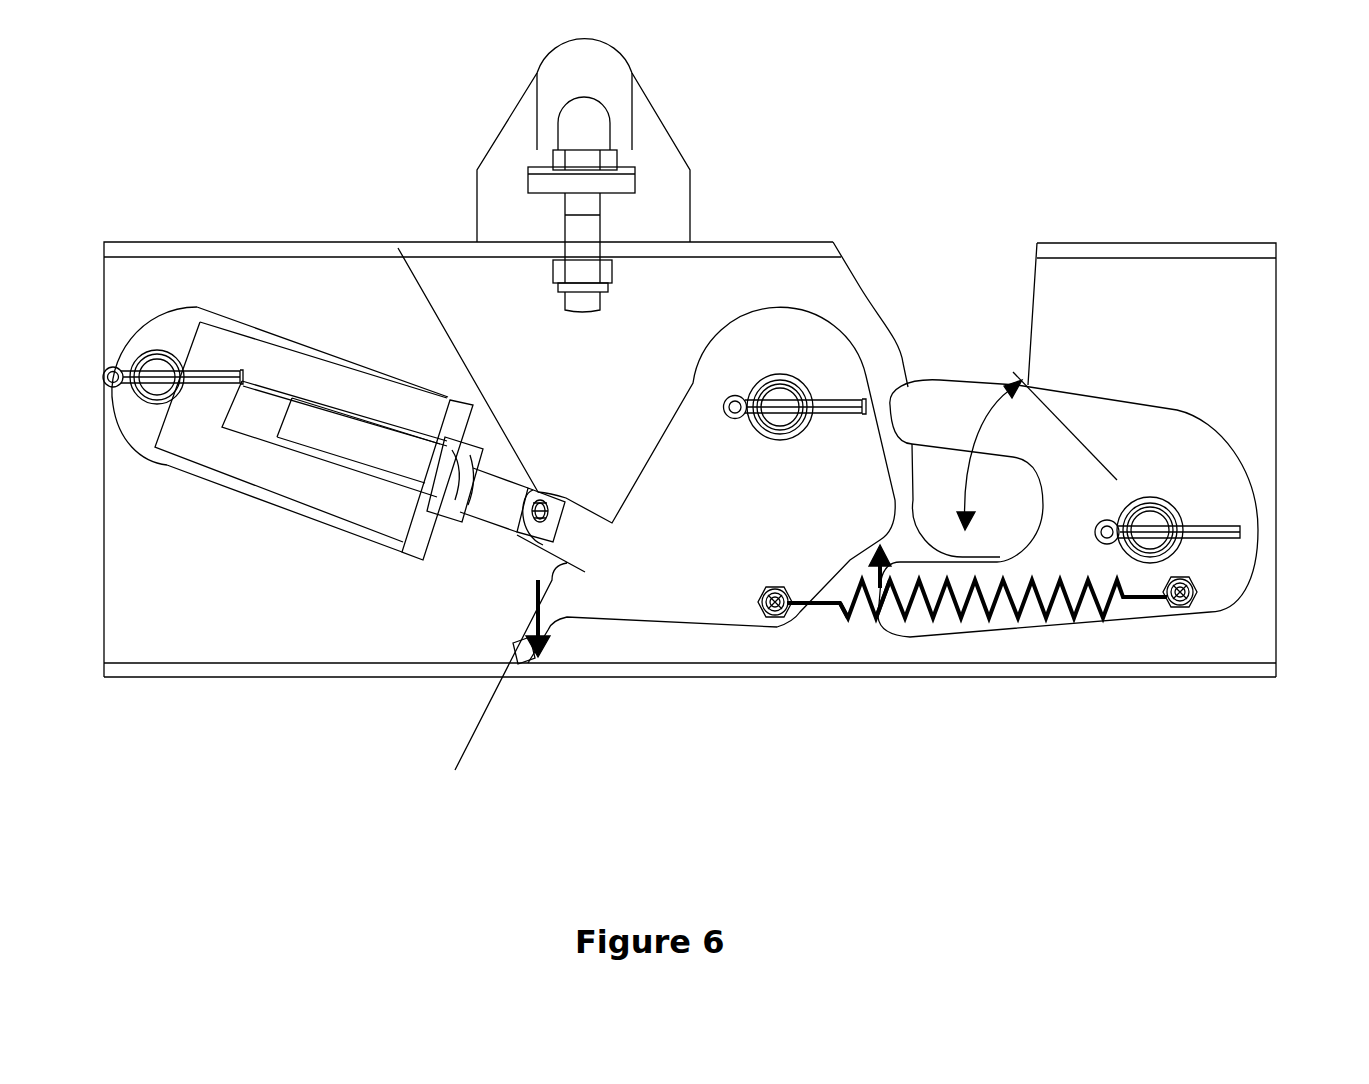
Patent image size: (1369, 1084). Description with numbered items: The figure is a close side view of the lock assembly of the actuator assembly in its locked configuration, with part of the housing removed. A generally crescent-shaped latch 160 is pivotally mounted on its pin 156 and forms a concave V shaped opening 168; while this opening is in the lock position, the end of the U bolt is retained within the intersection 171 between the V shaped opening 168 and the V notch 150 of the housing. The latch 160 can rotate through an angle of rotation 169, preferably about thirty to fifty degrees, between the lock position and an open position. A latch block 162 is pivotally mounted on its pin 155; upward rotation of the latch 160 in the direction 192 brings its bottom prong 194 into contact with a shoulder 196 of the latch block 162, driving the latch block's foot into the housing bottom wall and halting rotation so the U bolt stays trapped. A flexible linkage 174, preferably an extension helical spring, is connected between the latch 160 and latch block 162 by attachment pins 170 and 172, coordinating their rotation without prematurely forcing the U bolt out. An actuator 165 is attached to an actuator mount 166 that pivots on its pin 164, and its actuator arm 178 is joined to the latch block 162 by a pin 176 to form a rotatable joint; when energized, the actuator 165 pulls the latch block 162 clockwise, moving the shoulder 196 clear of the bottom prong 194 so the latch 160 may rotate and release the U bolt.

The V notch 150 is at (958, 236).
The pin 155 is at (780, 375).
The pin 156 is at (1195, 542).
The latch 160 is at (1158, 434).
The latch block 162 is at (665, 595).
The pin 164 is at (147, 356).
The actuator 165 is at (350, 453).
The actuator mount 166 is at (262, 366).
The V shaped opening 168 is at (918, 501).
The angle of rotation 169 is at (993, 410).
The attachment pin 170 is at (1187, 612).
The intersection 171 is at (995, 480).
The attachment pin 172 is at (770, 618).
The flexible linkage 174 is at (1000, 597).
The pin 176 is at (540, 502).
The actuator arm 178 is at (497, 505).
The direction 192 is at (871, 600).
The bottom prong 194 is at (896, 620).
The shoulder 196 is at (880, 538).